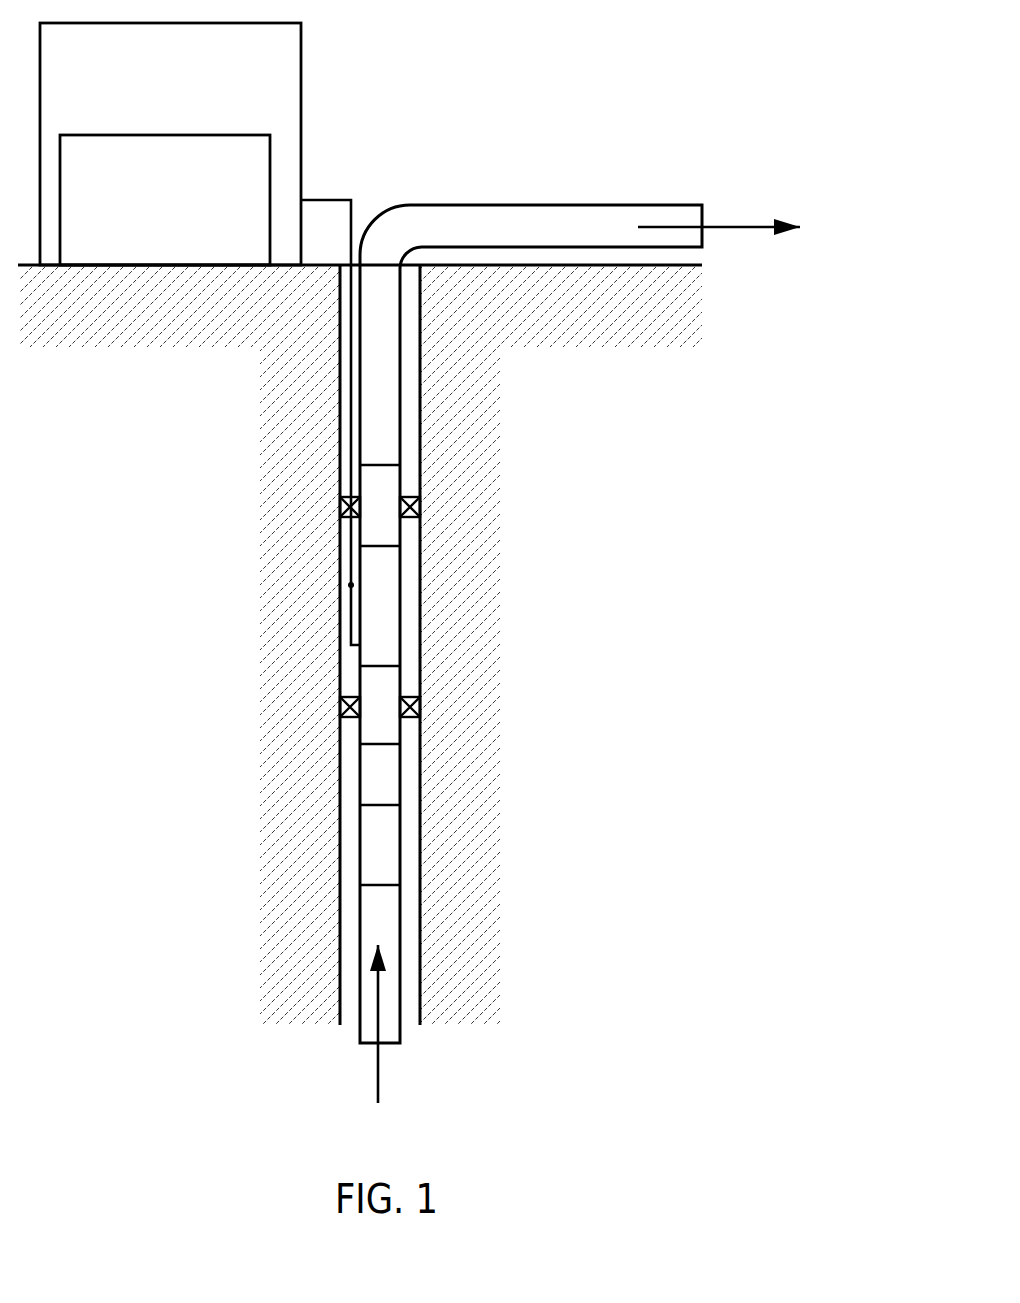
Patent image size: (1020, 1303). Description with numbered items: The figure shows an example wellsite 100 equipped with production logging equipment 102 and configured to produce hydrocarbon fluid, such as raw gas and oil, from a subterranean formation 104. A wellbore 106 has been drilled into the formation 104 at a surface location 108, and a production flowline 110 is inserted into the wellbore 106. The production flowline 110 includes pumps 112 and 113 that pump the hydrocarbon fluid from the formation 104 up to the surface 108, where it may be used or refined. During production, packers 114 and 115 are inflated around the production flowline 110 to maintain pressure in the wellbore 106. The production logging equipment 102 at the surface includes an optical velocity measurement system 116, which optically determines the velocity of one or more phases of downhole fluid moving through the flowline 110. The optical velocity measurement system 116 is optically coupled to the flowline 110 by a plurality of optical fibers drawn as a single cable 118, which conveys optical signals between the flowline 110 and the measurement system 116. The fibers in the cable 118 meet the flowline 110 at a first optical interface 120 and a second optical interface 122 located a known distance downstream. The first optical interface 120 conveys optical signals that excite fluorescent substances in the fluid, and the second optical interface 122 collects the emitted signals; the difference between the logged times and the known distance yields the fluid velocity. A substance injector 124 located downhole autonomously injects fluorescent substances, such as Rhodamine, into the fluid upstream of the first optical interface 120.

The wellsite 100 is at (792, 45).
The production logging equipment 102 is at (193, 125).
The subterranean formation 104 is at (277, 962).
The wellbore 106 is at (413, 378).
The surface location 108 is at (553, 175).
The production flowline 110 is at (359, 912).
The pump 112 is at (379, 487).
The pump 113 is at (379, 680).
The packer 114 is at (340, 502).
The packer 115 is at (422, 706).
The optical velocity measurement system 116 is at (143, 258).
The fiber optic cable 118 is at (322, 198).
The first optical interface 120 is at (370, 640).
The second optical interface 122 is at (370, 585).
The substance injector 124 is at (378, 825).